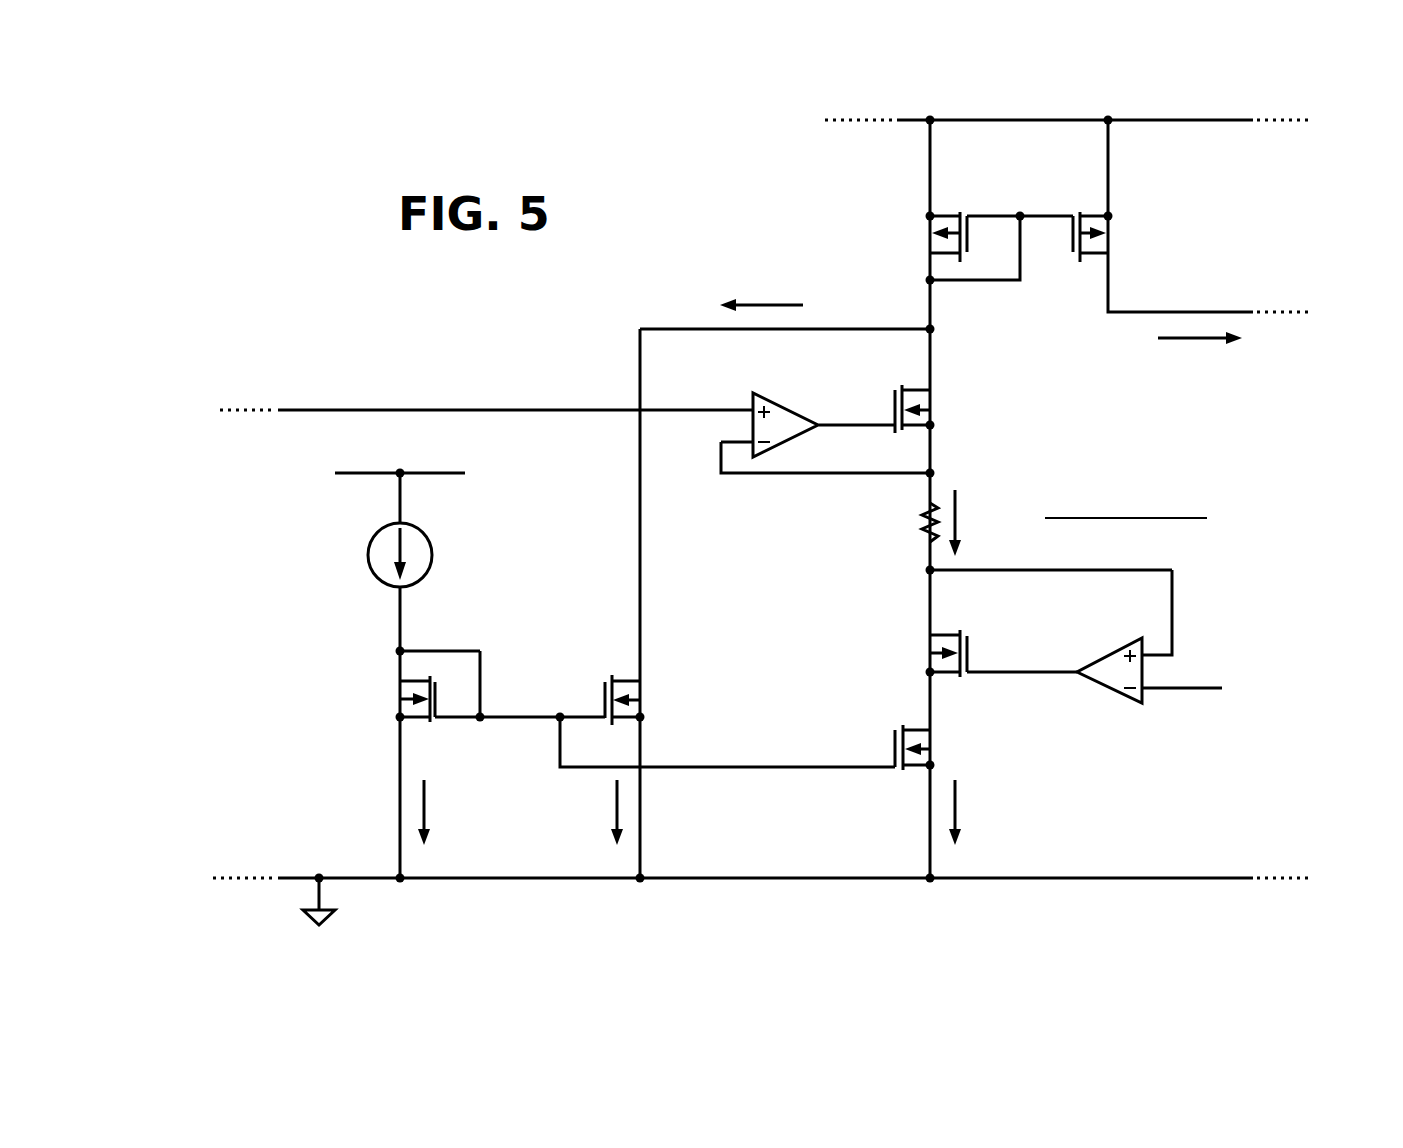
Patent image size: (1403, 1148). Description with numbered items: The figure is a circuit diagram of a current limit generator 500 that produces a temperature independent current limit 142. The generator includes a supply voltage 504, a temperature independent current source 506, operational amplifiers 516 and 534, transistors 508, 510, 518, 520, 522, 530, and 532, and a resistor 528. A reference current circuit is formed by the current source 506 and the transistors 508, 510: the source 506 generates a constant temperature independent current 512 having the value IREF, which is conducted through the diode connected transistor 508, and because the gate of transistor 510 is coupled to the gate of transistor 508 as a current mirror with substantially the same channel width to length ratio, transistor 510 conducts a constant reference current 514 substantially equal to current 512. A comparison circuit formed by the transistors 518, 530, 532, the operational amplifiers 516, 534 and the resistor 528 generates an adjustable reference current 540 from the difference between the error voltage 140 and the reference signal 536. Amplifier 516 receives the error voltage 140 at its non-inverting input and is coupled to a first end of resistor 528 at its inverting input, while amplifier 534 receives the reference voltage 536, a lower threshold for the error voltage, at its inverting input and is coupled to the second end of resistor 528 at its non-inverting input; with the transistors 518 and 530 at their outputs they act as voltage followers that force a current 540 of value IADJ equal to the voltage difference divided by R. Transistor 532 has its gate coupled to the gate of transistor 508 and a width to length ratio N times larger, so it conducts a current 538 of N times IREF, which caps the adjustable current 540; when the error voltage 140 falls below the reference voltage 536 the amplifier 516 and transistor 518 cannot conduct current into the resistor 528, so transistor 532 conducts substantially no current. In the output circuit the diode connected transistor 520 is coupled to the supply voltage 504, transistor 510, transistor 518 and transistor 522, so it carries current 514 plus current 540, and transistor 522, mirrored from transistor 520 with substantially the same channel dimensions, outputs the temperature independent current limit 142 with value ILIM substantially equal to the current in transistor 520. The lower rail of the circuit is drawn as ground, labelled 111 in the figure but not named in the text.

The current limit generator 500 is at (814, 499).
The supply voltage 504 is at (965, 114).
The transistor 520 is at (947, 205).
The transistor 522 is at (1093, 205).
The temperature independent current limit 142 is at (1148, 338).
The transistor 518 is at (915, 386).
The operational amplifier 516 is at (790, 403).
The error voltage 140 is at (322, 398).
The adjustable reference current 540 is at (963, 500).
The resistor 528 is at (912, 537).
The transistor 530 is at (947, 625).
The operational amplifier 534 is at (1105, 690).
The reference signal 536 is at (1272, 678).
The transistor 532 is at (917, 718).
The current 538 is at (960, 792).
The ground 111 is at (303, 922).
The temperature independent current source 506 is at (360, 560).
The transistor 508 is at (390, 690).
The transistor 510 is at (625, 672).
The constant temperature independent current 512 is at (432, 792).
The constant reference current 514 is at (605, 832).